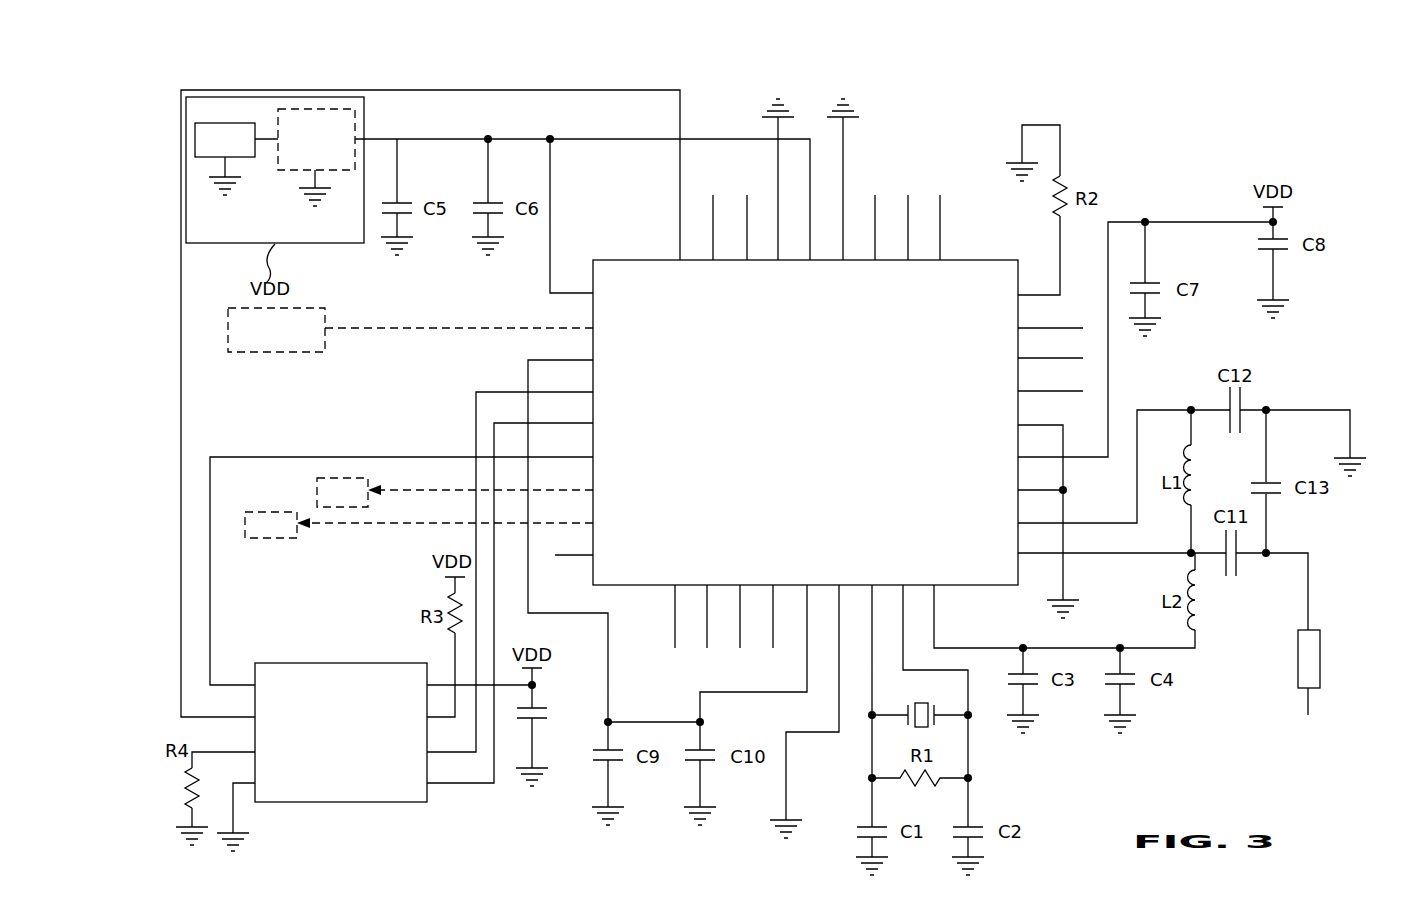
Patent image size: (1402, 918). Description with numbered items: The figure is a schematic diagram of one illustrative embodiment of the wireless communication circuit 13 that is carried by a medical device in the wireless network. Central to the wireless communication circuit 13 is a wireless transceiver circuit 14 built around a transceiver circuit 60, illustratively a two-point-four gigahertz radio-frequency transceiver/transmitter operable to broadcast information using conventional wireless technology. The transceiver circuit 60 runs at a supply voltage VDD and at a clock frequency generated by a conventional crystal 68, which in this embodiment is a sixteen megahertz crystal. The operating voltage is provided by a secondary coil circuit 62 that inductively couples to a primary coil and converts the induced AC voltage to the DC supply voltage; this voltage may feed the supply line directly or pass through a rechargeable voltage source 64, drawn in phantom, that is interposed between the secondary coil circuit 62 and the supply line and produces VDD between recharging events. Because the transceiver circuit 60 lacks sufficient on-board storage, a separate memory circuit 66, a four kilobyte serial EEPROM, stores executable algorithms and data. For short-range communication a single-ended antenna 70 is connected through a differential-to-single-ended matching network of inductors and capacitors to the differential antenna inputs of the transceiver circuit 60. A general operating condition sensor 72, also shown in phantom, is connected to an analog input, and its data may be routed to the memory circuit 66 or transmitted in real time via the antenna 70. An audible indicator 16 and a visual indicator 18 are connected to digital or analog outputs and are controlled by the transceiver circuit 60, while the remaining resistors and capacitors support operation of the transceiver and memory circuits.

The wireless communication circuit 13 is at (1286, 160).
The wireless transceiver circuit 14 is at (528, 838).
The audible indicator 16 is at (317, 492).
The visual indicator 18 is at (276, 540).
The transceiver circuit 60 is at (640, 588).
The secondary coil circuit 62 is at (248, 158).
The rechargeable voltage source 64 is at (338, 172).
The memory circuit 66 is at (340, 663).
The crystal 68 is at (915, 703).
The antenna 70 is at (1298, 665).
The operating condition sensor 72 is at (280, 354).